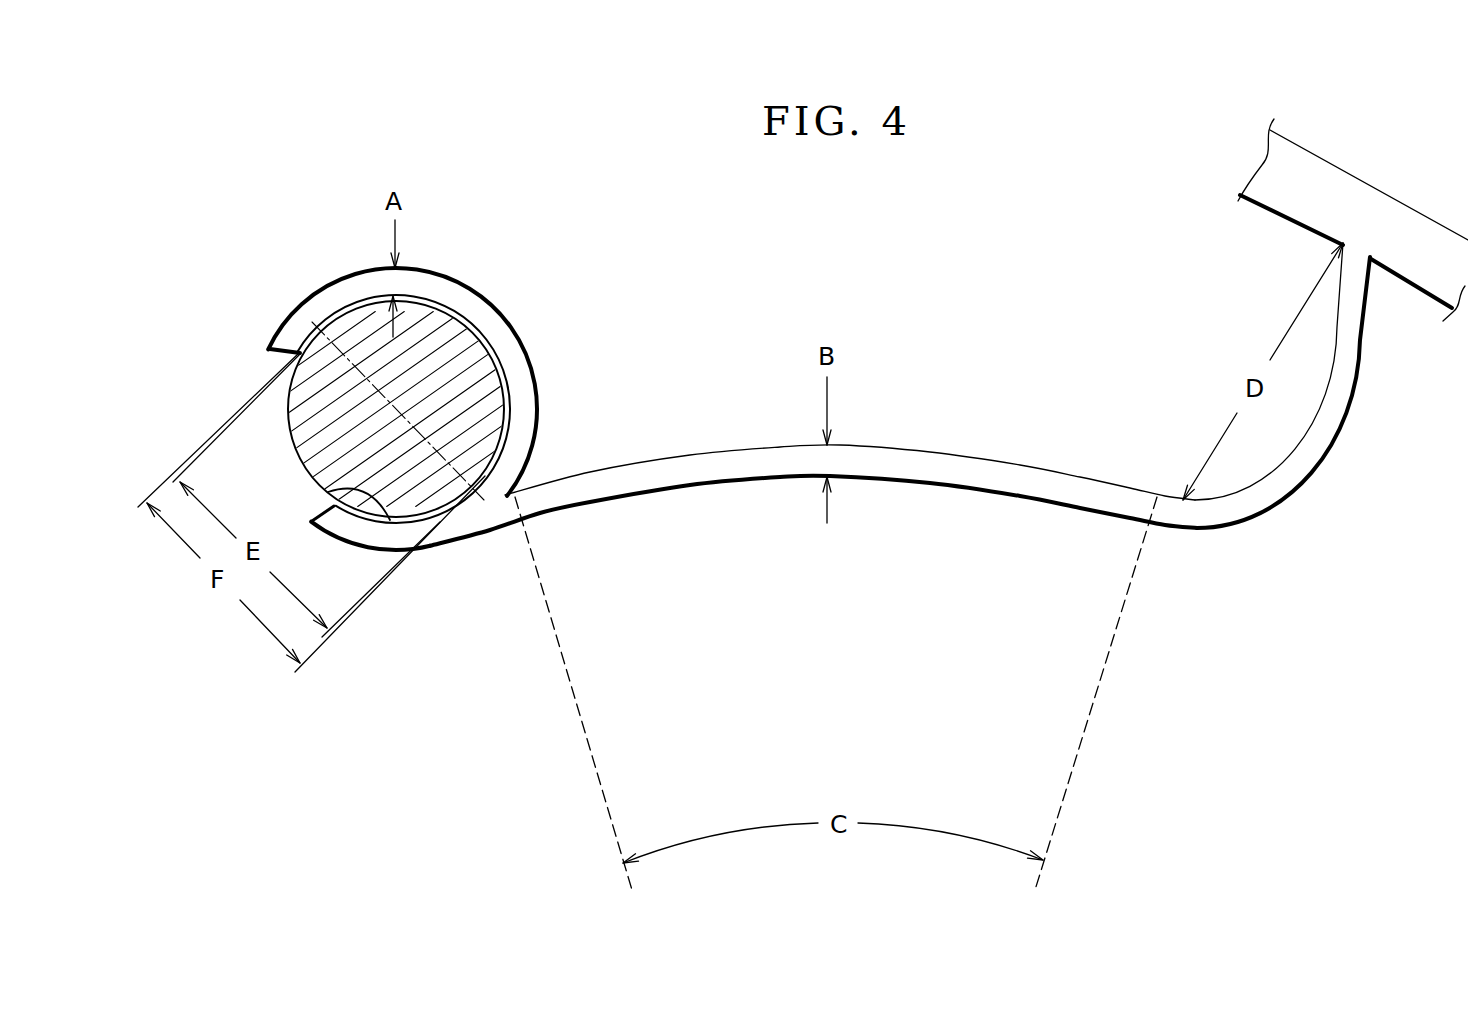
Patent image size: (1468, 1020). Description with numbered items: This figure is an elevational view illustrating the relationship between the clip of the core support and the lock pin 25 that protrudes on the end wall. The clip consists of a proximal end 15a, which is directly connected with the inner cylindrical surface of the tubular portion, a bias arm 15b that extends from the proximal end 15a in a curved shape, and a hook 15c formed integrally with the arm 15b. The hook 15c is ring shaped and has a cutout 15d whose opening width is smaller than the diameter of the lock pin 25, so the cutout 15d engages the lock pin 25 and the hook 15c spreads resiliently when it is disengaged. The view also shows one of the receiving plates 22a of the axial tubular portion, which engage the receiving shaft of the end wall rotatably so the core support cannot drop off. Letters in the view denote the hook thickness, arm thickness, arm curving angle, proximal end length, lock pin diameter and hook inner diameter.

The proximal end 15a is at (1322, 432).
The bias arm 15b is at (965, 462).
The hook 15c is at (463, 297).
The cutout 15d is at (328, 492).
The lock pin 25 is at (487, 391).
The receiving plates 22a is at (1402, 210).